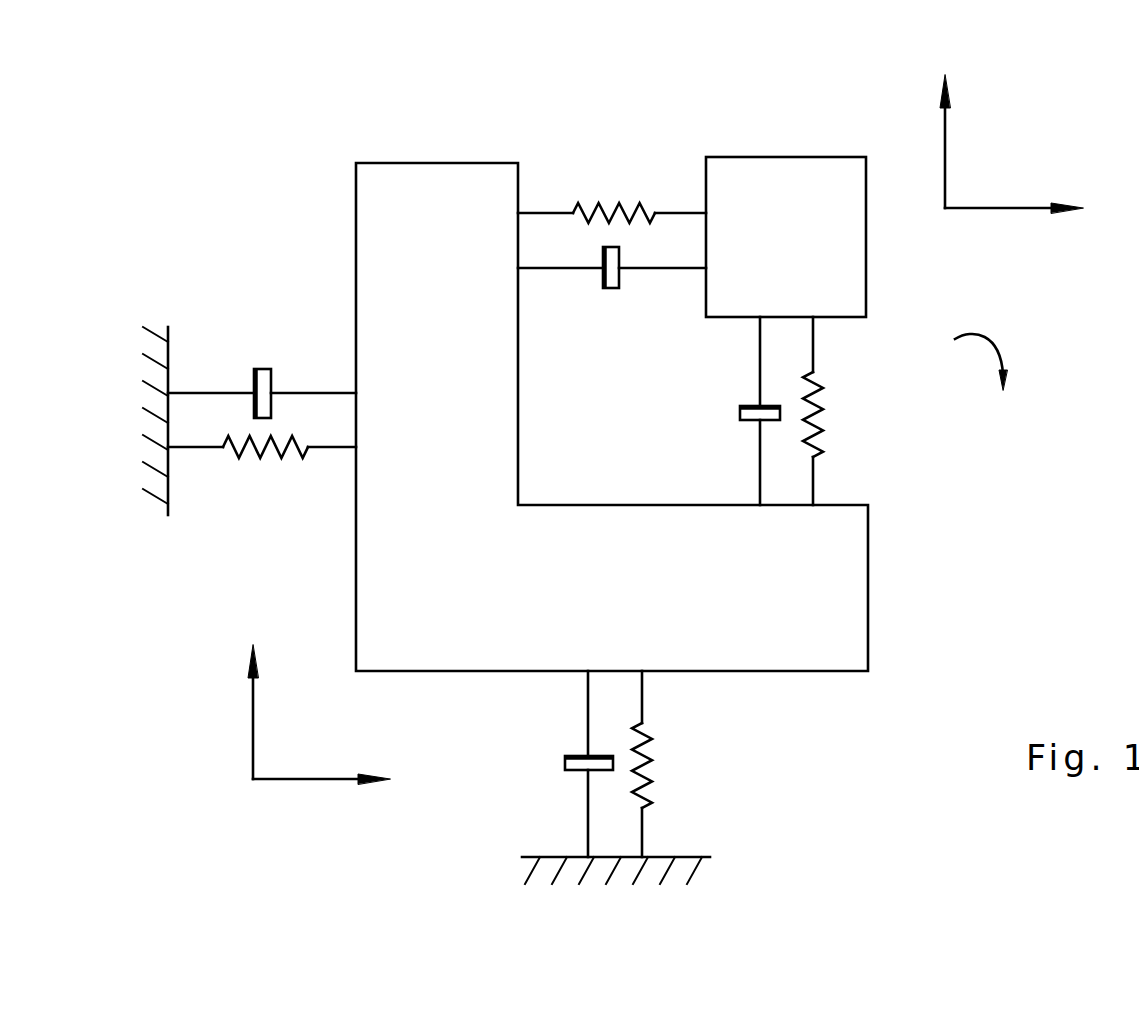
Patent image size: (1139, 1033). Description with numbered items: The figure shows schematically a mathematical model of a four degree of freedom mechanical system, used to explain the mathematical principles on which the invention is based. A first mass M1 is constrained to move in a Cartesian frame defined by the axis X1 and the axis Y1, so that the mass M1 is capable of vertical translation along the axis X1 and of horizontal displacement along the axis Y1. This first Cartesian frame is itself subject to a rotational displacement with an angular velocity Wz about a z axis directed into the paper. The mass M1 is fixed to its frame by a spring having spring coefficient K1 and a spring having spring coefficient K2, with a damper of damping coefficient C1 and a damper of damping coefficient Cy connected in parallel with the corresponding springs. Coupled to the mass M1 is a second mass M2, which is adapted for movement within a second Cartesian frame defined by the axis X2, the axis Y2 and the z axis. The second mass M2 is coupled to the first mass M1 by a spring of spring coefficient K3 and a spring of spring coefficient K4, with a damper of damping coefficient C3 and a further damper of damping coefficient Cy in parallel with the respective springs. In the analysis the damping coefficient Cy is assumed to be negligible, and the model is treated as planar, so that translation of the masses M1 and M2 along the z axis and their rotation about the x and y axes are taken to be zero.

The mass M1 is at (612, 417).
The second mass M2 is at (786, 237).
The spring coefficient K1 is at (666, 764).
The spring coefficient K2 is at (249, 421).
The spring coefficient K3 is at (837, 411).
The spring coefficient K4 is at (612, 195).
The damping coefficient C1 is at (612, 777).
The damping coefficient C3 is at (737, 411).
The damping coefficient Cy is at (437, 332).
The axis X1 is at (260, 693).
The axis Y1 is at (344, 781).
The axis X2 is at (953, 122).
The axis Y2 is at (1034, 213).
The angular velocity Wz is at (981, 382).